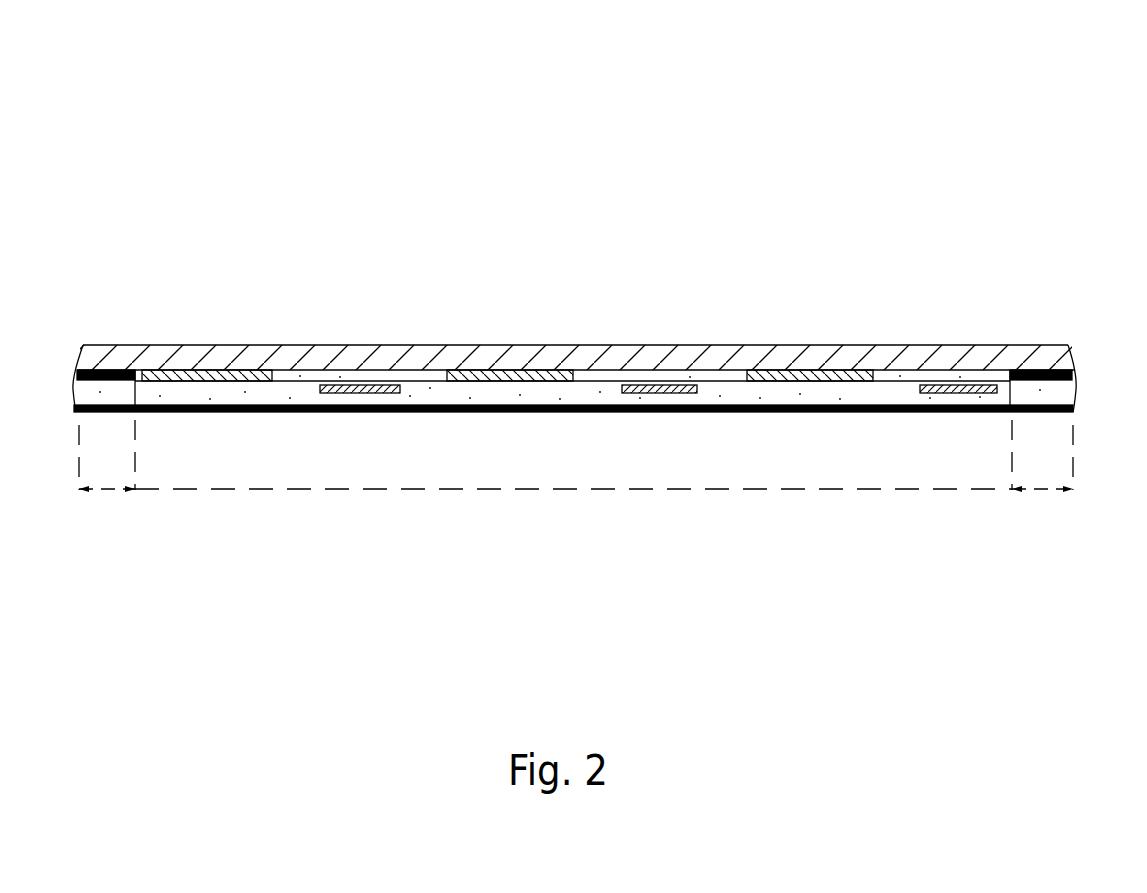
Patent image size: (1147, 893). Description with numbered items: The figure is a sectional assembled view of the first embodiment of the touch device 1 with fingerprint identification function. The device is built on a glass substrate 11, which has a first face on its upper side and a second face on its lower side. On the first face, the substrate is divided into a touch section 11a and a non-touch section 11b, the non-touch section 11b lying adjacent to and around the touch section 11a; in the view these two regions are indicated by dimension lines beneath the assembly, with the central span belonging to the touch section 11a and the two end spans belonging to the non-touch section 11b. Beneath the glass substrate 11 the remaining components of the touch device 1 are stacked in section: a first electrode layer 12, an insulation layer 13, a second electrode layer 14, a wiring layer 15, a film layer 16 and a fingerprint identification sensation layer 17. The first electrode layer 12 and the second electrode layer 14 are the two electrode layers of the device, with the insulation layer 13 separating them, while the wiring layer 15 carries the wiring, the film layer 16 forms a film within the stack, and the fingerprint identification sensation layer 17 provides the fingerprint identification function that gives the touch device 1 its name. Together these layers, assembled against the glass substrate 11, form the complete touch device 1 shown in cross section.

The touch device 1 is at (1077, 151).
The glass substrate 11 is at (268, 357).
The touch section 11a is at (532, 490).
The non-touch section 11b is at (105, 490).
The first electrode layer 12 is at (175, 367).
The insulation layer 13 is at (683, 383).
The second electrode layer 14 is at (362, 383).
The wiring layer 15 is at (1043, 370).
The film layer 16 is at (872, 397).
The fingerprint identification sensation layer 17 is at (492, 392).